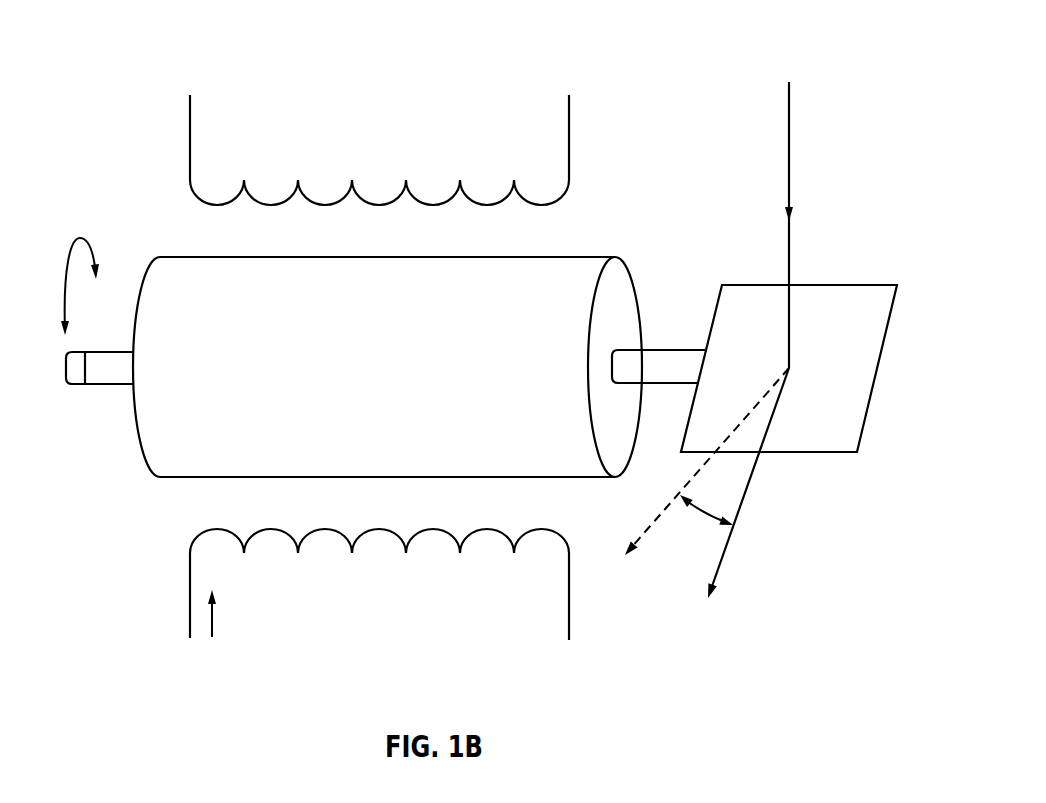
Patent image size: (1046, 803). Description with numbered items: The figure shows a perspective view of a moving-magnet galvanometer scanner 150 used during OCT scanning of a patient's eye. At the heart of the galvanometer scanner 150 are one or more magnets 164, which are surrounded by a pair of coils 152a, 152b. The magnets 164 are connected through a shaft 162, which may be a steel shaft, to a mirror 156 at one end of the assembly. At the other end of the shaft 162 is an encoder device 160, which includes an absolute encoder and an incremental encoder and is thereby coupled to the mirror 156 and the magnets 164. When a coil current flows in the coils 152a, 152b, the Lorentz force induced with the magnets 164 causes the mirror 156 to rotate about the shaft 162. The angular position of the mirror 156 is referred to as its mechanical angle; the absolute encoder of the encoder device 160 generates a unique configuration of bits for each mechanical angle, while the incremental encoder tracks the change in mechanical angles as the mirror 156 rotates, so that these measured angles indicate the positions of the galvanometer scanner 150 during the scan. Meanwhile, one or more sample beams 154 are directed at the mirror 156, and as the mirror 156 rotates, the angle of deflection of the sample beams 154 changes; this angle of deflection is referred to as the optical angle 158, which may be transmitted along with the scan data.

The galvanometer scanner 150 is at (114, 38).
The coil 152a is at (569, 150).
The coil 152b is at (569, 595).
The sample beam 154 is at (789, 150).
The mirror 156 is at (843, 284).
The optical angle 158 is at (768, 522).
The encoder device 160 is at (73, 386).
The shaft 162 is at (123, 386).
The magnets 164 is at (178, 478).